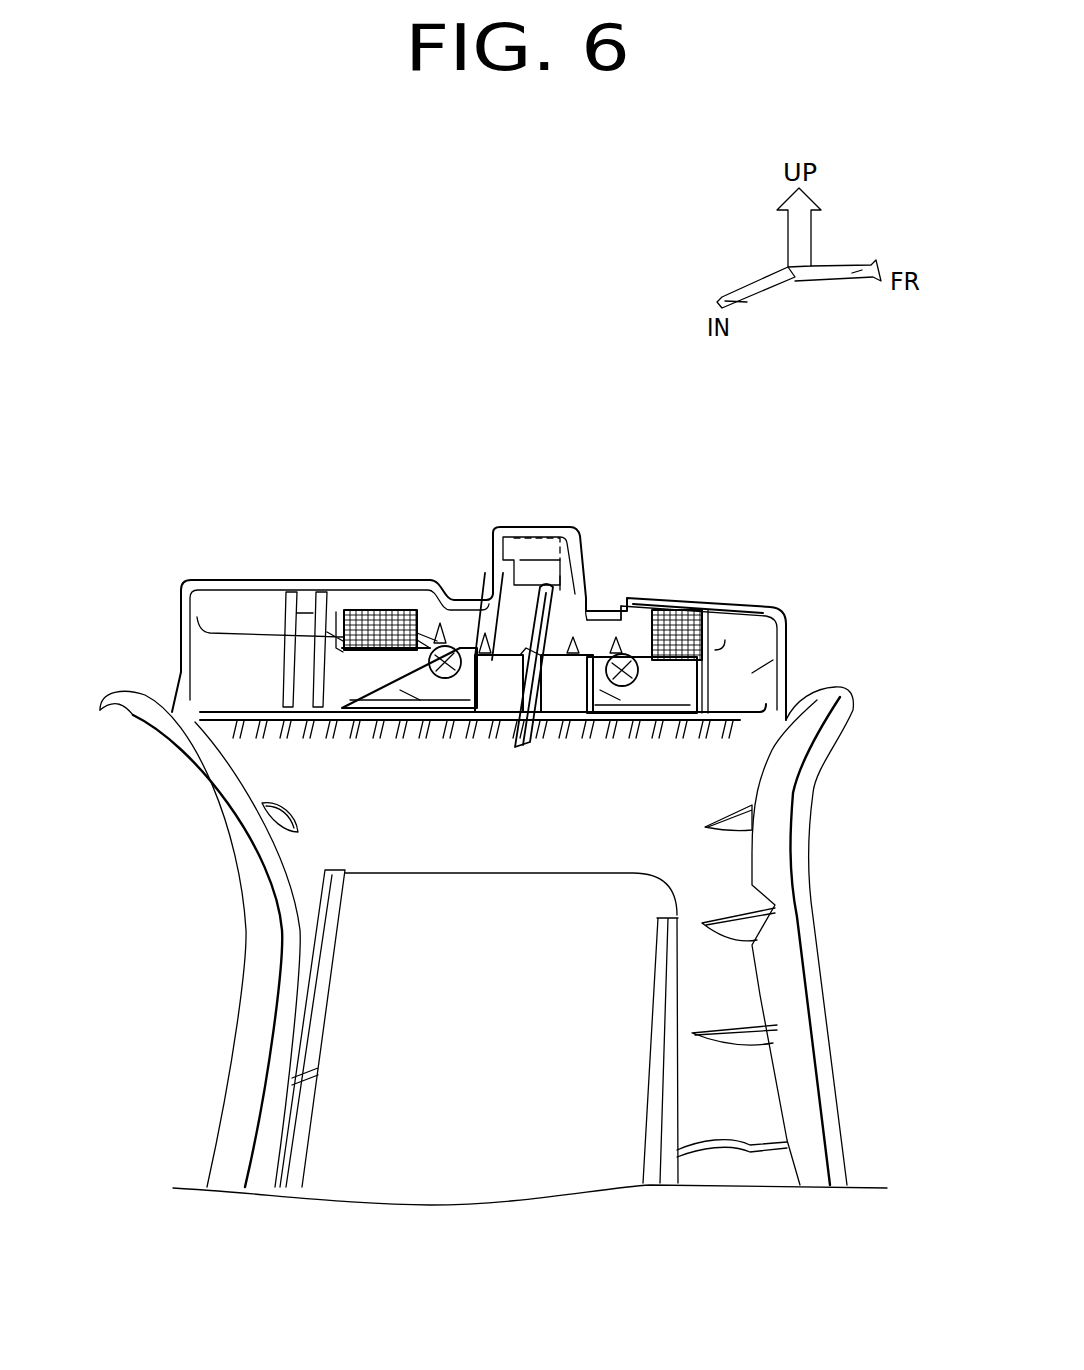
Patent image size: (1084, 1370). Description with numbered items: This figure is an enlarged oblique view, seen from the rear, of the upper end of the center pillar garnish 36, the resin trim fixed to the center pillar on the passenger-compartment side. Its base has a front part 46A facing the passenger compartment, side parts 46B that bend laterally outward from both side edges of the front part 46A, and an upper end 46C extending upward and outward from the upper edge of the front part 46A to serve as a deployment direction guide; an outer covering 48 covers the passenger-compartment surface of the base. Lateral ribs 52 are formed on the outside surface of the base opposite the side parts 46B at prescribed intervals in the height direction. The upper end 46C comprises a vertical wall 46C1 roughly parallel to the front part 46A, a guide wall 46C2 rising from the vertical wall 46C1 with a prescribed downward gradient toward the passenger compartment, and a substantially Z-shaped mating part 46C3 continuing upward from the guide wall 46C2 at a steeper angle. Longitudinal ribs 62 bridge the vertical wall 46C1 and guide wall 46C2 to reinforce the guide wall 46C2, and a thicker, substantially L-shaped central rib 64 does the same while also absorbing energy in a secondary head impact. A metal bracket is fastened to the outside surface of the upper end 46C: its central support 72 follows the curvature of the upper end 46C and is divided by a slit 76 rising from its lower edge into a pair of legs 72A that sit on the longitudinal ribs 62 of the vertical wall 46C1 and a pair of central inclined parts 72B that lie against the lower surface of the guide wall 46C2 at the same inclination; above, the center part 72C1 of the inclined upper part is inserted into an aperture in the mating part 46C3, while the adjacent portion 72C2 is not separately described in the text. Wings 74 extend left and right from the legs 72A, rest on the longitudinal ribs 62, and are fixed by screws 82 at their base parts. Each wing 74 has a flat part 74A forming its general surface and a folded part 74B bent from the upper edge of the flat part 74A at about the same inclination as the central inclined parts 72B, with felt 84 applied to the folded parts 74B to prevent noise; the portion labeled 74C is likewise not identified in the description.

The center pillar garnish 36 is at (203, 1108).
The front part 46A is at (733, 857).
The side parts 46B is at (247, 1032).
The upper end 46C is at (790, 592).
The vertical wall 46C1 is at (753, 682).
The guide wall 46C2 is at (737, 630).
The mating part 46C3 is at (510, 530).
The outer covering 48 is at (253, 962).
The lateral ribs 52 is at (763, 1147).
The longitudinal ribs 62 is at (313, 668).
The central rib 64 is at (527, 740).
The central support 72 is at (496, 571).
The legs 72A is at (493, 690).
The central inclined parts 72B is at (517, 682).
The center part of the inclined upper part 72C1 is at (540, 545).
The bracket upper wall 72C2 is at (547, 558).
The wings 74 is at (333, 735).
The flat parts 74A is at (370, 690).
The folded parts 74B is at (341, 613).
The holder bottom 74C is at (413, 713).
The slit 76 is at (557, 578).
The screws 82 is at (447, 640).
The felt 84 is at (388, 610).